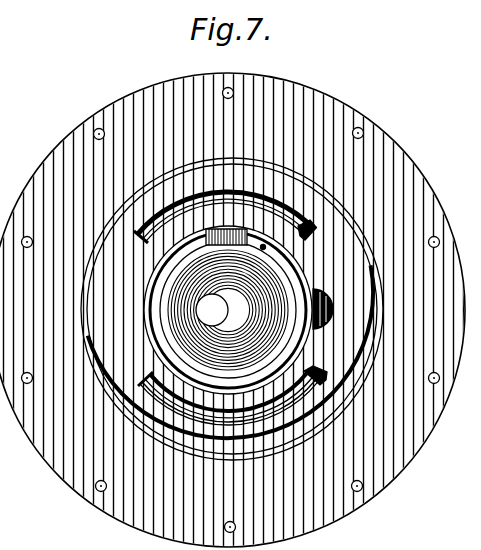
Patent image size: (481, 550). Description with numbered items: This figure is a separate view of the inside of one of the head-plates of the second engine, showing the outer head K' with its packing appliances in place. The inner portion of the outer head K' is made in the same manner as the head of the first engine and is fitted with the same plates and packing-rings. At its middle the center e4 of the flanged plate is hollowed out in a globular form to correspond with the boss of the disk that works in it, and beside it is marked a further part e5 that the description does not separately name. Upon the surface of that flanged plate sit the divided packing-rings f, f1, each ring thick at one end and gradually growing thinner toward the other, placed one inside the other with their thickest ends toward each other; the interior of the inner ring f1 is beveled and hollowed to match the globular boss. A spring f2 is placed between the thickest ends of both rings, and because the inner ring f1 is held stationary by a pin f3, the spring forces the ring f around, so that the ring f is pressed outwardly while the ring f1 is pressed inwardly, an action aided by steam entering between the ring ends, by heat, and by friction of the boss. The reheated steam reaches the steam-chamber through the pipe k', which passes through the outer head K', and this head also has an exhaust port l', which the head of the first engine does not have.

The outer head K' is at (232, 310).
The pipe k' is at (225, 210).
The exhaust port l' is at (232, 395).
The divided packing-ring f is at (228, 310).
The inner packing-ring f1 is at (268, 254).
The spring f2 is at (226, 226).
The pin f3 is at (264, 247).
The center of flanged plate e4 is at (220, 310).
The spiral spring e5 is at (228, 310).